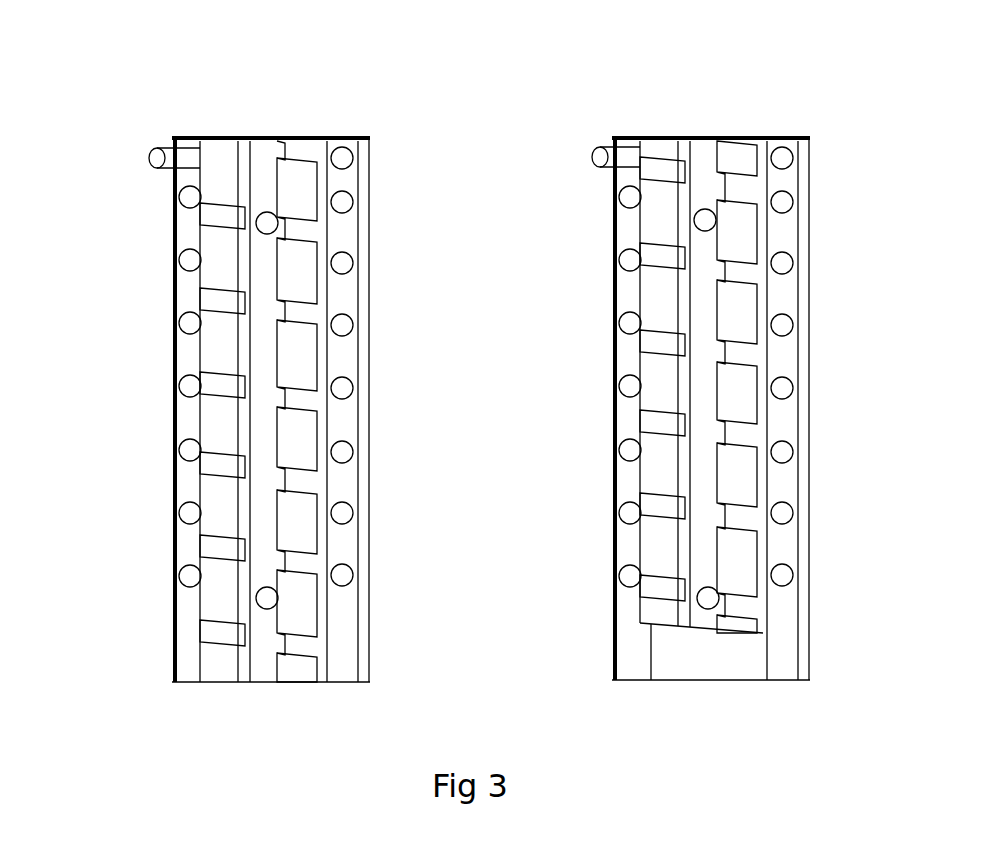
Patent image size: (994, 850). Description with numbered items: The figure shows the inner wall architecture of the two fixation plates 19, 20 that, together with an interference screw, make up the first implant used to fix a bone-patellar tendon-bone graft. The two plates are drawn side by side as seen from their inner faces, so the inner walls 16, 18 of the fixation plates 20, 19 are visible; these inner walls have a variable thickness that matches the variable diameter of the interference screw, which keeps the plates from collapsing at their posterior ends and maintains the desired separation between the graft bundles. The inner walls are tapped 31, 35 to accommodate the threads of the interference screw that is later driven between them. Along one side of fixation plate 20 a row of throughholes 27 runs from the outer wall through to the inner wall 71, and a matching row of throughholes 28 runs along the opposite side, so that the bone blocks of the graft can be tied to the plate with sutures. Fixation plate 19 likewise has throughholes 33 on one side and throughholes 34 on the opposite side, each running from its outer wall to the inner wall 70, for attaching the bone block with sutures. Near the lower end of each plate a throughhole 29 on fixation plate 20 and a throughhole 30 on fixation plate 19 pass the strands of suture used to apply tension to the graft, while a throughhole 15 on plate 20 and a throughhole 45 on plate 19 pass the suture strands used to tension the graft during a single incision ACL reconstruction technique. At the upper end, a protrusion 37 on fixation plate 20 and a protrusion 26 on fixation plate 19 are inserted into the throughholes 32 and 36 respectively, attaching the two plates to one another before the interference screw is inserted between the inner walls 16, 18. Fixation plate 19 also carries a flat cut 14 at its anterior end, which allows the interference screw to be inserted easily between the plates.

The flat cut 14 is at (690, 667).
The throughhole 15 is at (267, 223).
The inner wall 16 is at (223, 430).
The inner wall 18 is at (732, 388).
The fixation plate 19 is at (701, 132).
The fixation plate 20 is at (260, 130).
The protrusion 26 is at (597, 153).
The throughholes 27 is at (342, 573).
The throughholes 28 is at (185, 573).
The throughhole 29 is at (268, 597).
The throughhole 30 is at (705, 597).
The tapping 31 is at (300, 230).
The throughhole 32 is at (343, 157).
The throughholes 33 is at (783, 575).
The throughholes 34 is at (630, 575).
The tapping 35 is at (662, 340).
The throughhole 36 is at (783, 155).
The protrusion 37 is at (157, 158).
The throughhole 45 is at (707, 220).
The inner wall 70 is at (783, 357).
The inner wall 71 is at (343, 352).